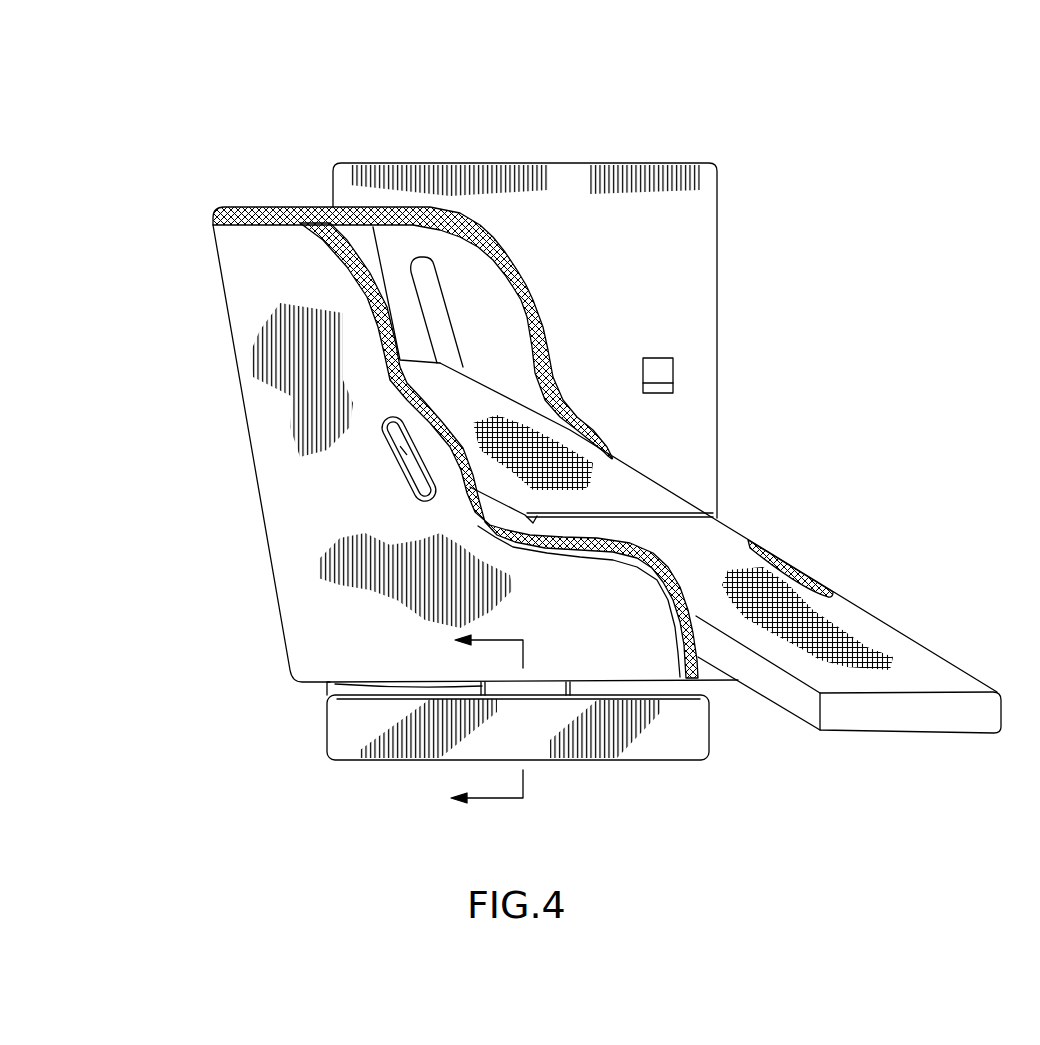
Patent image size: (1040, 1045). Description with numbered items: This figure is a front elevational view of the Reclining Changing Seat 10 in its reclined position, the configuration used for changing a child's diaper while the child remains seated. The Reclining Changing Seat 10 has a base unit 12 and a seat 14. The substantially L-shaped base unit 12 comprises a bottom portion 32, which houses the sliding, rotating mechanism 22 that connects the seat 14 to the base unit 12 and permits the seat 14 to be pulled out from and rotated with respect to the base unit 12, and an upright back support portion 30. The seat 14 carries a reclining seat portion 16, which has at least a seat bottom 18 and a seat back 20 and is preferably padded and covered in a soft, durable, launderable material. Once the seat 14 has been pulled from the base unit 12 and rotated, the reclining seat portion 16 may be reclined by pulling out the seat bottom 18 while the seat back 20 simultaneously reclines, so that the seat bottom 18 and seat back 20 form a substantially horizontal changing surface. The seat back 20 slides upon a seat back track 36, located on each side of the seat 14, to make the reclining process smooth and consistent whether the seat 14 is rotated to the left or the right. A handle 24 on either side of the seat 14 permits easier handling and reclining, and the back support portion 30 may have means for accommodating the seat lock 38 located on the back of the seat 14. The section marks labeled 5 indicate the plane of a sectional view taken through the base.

The Reclining Changing Seat 10 is at (420, 110).
The base unit 12 is at (710, 732).
The seat 14 is at (249, 321).
The reclining seat portion 16 is at (667, 490).
The seat bottom 18 is at (815, 600).
The seat back 20 is at (557, 440).
The mechanism 22 is at (327, 682).
The handle 24 is at (380, 440).
The back support portion 30 is at (688, 217).
The bottom portion 32 is at (623, 747).
The seat back track 36 is at (413, 258).
The seat lock 38 is at (670, 370).
The section line 5- 5 is at (498, 723).